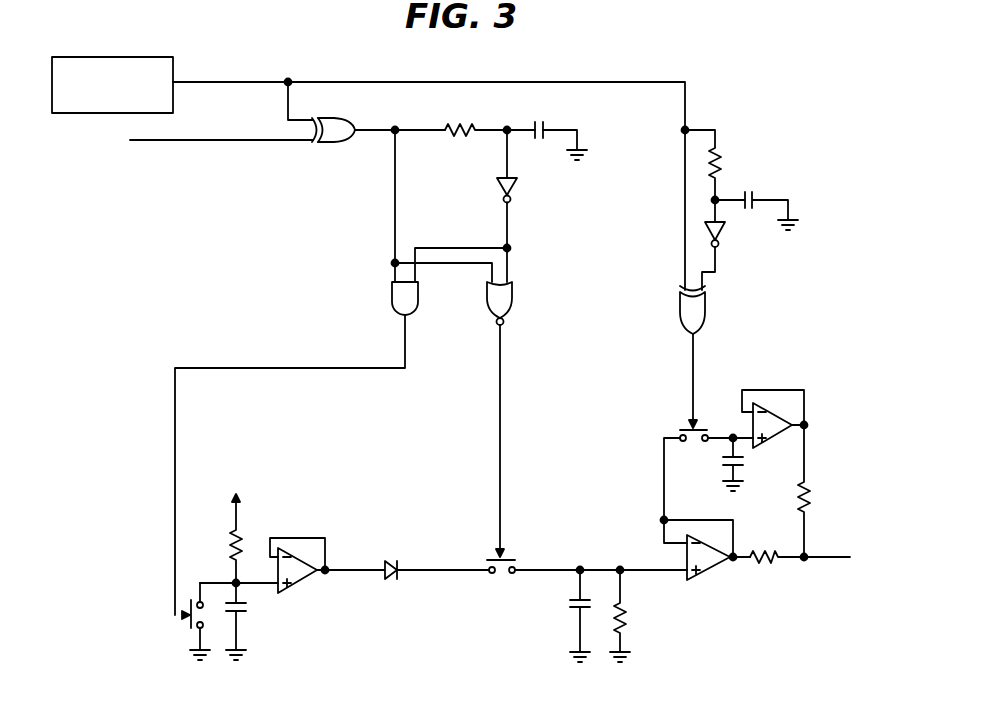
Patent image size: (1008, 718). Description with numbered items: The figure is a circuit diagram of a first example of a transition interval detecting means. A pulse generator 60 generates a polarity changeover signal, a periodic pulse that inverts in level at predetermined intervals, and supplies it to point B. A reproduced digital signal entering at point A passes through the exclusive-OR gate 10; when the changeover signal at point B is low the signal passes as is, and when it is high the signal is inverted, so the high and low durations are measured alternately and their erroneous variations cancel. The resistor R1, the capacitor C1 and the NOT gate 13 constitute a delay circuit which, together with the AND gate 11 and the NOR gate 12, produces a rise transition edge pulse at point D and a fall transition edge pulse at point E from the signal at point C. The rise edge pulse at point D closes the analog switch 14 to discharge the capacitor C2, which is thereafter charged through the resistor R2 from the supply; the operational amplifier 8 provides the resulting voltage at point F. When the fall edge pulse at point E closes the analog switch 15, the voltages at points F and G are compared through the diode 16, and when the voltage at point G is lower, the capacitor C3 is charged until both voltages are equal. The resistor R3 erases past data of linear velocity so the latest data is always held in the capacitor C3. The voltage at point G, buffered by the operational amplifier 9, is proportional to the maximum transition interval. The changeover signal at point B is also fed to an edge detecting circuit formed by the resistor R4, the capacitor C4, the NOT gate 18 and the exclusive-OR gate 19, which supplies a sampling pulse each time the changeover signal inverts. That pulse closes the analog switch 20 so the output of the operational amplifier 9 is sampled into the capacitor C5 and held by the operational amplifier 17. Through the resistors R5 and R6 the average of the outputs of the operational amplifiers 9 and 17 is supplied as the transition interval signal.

The pulse generator 60 is at (168, 69).
The exclusive-OR gate 10 is at (340, 139).
The resistor R1 is at (460, 125).
The capacitor C1 is at (545, 124).
The NOT gate 13 is at (526, 175).
The AND gate 11 is at (388, 309).
The NOR gate 12 is at (488, 309).
The resistor R4 is at (722, 158).
The capacitor C4 is at (754, 194).
The NOT gate 18 is at (720, 232).
The exclusive-OR gate 19 is at (703, 321).
The analog switch 20 is at (699, 426).
The operational amplifier 17 is at (785, 430).
The capacitor C5 is at (738, 466).
The resistor R6 is at (808, 490).
The operational amplifier 9 is at (708, 575).
The resistor R5 is at (770, 562).
The analog switch 15 is at (505, 556).
The capacitor C3 is at (570, 600).
The resistor R3 is at (625, 612).
The diode 16 is at (391, 560).
The operational amplifier 8 is at (302, 578).
The resistor R2 is at (231, 539).
The capacitor C2 is at (240, 612).
The analog switch 14 is at (185, 622).
The point A is at (233, 142).
The point B is at (231, 84).
The point C is at (378, 105).
The point D is at (405, 357).
The point E is at (500, 357).
The point F is at (325, 542).
The point G is at (606, 568).